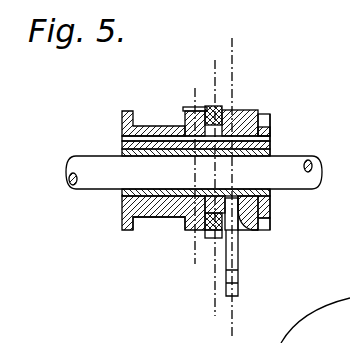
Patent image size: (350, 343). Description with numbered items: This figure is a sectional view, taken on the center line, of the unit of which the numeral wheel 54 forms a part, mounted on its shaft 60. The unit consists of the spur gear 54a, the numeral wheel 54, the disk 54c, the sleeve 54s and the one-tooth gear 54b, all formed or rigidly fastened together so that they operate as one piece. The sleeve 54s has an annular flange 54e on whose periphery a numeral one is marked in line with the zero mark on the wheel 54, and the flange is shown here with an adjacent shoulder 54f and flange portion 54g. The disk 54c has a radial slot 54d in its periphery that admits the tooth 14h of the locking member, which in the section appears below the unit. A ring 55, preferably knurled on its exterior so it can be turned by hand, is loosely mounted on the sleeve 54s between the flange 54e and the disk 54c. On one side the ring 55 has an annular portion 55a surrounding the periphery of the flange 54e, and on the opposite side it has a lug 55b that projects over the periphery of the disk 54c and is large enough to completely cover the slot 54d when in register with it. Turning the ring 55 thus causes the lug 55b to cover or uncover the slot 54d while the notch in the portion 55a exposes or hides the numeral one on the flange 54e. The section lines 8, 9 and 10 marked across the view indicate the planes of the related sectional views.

The section line 8- 8 is at (187, 87).
The section line 9- 9 is at (205, 43).
The section line 10- 10 is at (229, 67).
The tooth of locking member 14h is at (236, 264).
The numeral wheel 54 is at (251, 232).
The spur gear 54a is at (271, 226).
The one-tooth gear 54b is at (128, 221).
The disk 54c is at (236, 118).
The slot in disk 54d is at (240, 212).
The annular flange 54e is at (192, 122).
The shoulder 54f is at (268, 142).
The flange 54g is at (130, 136).
The sleeve 54s is at (164, 200).
The ring 55 is at (216, 112).
The annular portion of ring 55a is at (159, 225).
The lug of ring 55b is at (256, 219).
The shaft 60 is at (86, 180).